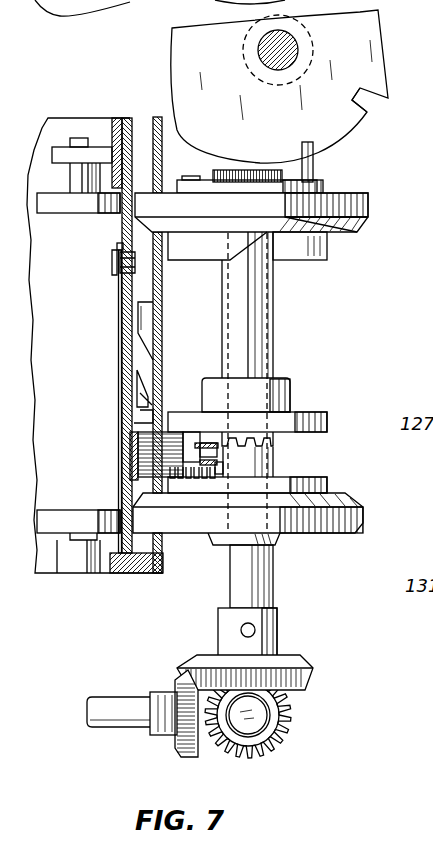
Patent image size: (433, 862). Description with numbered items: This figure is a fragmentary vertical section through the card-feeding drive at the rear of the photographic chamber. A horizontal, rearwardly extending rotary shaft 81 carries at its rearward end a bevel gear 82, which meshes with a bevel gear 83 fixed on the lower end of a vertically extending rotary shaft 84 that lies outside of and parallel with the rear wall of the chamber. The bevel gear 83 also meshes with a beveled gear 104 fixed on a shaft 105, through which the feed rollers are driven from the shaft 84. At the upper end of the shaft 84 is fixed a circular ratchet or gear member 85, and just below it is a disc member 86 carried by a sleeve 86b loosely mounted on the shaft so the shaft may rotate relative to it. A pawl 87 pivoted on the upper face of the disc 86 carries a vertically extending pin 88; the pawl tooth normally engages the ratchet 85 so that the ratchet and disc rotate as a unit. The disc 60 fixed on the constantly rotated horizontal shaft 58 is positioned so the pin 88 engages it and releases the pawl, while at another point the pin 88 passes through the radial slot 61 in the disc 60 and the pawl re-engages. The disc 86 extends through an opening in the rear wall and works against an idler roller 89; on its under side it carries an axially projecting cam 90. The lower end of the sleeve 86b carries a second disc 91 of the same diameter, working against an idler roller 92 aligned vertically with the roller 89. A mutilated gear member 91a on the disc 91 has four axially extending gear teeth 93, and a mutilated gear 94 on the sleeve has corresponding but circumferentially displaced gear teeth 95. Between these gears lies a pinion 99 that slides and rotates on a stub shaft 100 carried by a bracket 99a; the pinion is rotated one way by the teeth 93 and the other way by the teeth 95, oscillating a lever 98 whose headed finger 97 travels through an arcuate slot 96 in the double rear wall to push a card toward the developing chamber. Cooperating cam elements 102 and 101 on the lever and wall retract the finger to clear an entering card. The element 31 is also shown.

The horizontal shaft 58 is at (265, 42).
The disc 60 is at (378, 52).
The slot 61 is at (380, 104).
The ratchet or gear member 85 is at (213, 170).
The pin 88 is at (313, 165).
The pawl 87 is at (323, 185).
The disc member 86 is at (368, 200).
The sleeve 86b is at (273, 330).
The cam 90 is at (327, 254).
The idler roller 89 is at (78, 210).
The headed finger 97 is at (112, 262).
The arcuate slot 96 is at (122, 272).
The rod 31 is at (118, 455).
The lever 98 is at (133, 348).
The cam element 101 is at (145, 320).
The cam element 102 is at (145, 396).
The pinion 99 is at (150, 440).
The bracket 99a is at (200, 445).
The gear teeth 93 is at (222, 473).
The stub shaft 100 is at (192, 480).
The idler roller 92 is at (67, 517).
The mutilated gear 94 is at (290, 392).
The gear teeth 95 is at (275, 438).
The mutilated gear member 91a is at (300, 485).
The second disc 91 is at (365, 517).
The rotary shaft 84 is at (273, 568).
The bevel gear 83 is at (300, 662).
The beveled gear 104 is at (285, 738).
The shaft 105 is at (258, 712).
The bevel gear 82 is at (183, 750).
The rotary shaft 81 is at (120, 722).